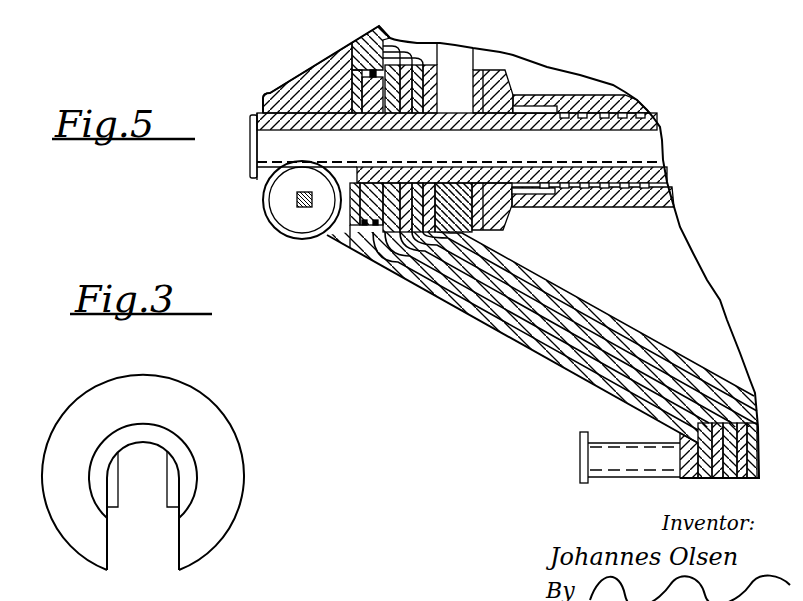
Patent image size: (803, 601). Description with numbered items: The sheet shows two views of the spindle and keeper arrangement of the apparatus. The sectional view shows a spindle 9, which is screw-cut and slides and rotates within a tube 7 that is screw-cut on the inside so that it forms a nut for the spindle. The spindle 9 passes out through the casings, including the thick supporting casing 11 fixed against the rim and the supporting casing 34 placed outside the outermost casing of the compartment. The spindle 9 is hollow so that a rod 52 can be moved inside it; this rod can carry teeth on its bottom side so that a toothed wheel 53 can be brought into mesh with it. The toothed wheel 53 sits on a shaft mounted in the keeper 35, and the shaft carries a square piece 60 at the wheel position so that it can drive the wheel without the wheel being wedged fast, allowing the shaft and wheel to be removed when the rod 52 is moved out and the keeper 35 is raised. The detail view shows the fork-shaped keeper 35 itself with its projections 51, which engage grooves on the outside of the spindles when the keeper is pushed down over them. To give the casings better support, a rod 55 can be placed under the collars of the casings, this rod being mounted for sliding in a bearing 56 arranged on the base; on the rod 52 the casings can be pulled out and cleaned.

In FIG. 5, the tube 7 is at (525, 100).
In FIG. 5, the spindle 9 is at (272, 135).
In FIG. 5, the supporting casing 11 is at (548, 297).
In FIG. 5, the supporting casing 34 is at (370, 243).
In FIG. 5, the keeper 35 is at (324, 70).
In FIG. 3, the keeper 35 is at (68, 507).
In FIG. 3, the projections 51 is at (172, 495).
In FIG. 5, the rod 52 is at (257, 118).
In FIG. 5, the toothed wheel 53 is at (283, 198).
In FIG. 5, the rod 55 is at (578, 455).
In FIG. 5, the bearing 56 is at (635, 480).
In FIG. 5, the square piece 60 is at (305, 208).